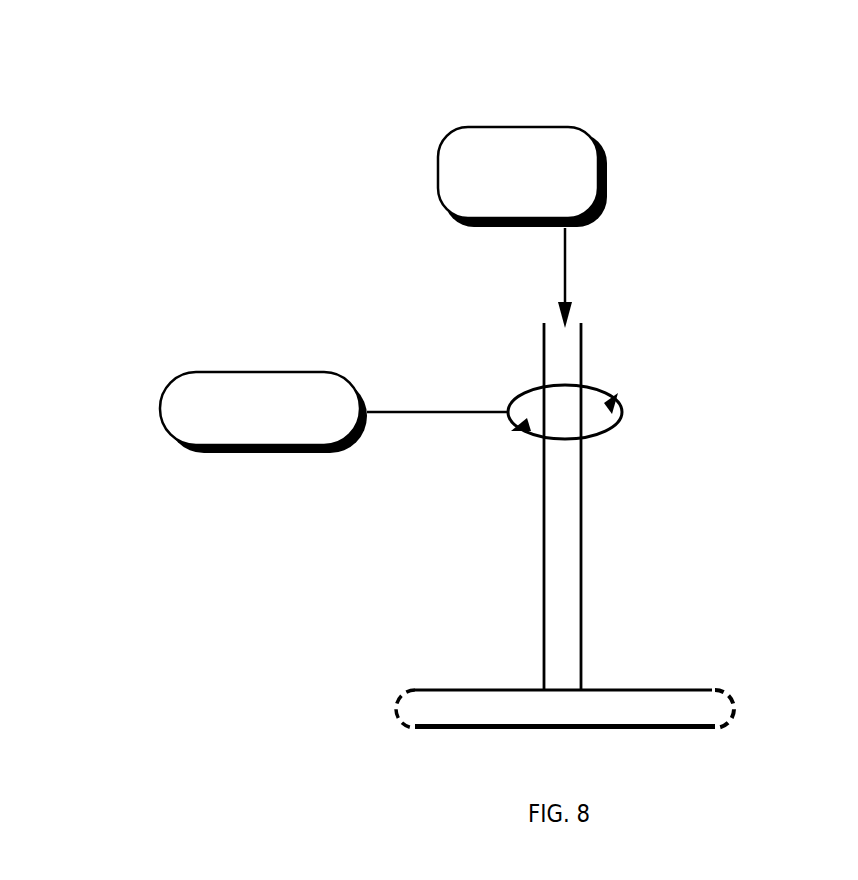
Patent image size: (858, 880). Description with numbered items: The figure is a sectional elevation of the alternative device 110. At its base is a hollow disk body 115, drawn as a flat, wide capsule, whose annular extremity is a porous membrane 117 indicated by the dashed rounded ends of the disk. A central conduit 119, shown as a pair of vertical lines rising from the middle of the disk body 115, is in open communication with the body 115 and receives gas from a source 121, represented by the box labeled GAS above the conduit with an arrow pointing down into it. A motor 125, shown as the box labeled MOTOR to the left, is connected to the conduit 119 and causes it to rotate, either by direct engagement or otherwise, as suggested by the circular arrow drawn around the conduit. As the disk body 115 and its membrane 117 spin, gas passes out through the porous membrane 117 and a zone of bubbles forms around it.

The alternative device 110 is at (738, 96).
The gas source 121 is at (438, 165).
The motor 125 is at (255, 372).
The central conduit 119 is at (567, 537).
The porous membrane 117 is at (757, 701).
The hollow disk body 115 is at (624, 729).